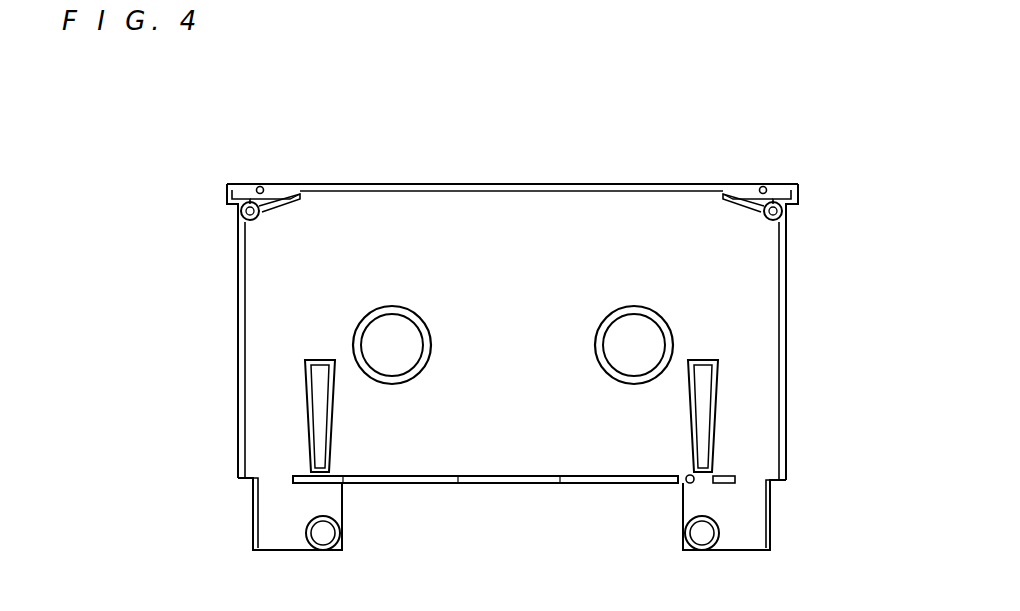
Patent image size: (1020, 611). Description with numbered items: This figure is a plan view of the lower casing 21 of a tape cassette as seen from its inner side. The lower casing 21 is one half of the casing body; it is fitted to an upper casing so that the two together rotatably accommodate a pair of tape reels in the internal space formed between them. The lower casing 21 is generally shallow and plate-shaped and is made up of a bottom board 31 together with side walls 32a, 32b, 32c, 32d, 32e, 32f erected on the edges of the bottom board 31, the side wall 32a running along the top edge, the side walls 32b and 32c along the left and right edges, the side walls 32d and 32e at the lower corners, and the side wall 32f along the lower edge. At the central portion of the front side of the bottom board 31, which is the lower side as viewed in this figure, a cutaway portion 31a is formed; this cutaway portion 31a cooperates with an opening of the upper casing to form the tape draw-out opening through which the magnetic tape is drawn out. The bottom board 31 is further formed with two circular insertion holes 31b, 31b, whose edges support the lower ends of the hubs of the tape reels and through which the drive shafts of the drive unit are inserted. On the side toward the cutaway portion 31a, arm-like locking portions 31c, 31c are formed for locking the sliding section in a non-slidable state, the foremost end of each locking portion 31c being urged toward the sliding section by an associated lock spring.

The lower casing 21 is at (425, 151).
The bottom board 31 is at (695, 220).
The cutaway portion 31a is at (577, 512).
The circular insertion hole 31b is at (393, 332).
The arm-like locking portion 31c is at (322, 418).
The side wall 32a is at (487, 190).
The side wall 32b is at (238, 305).
The side wall 32c is at (786, 312).
The side wall 32d is at (253, 547).
The side wall 32e is at (772, 548).
The side wall 32f is at (518, 484).